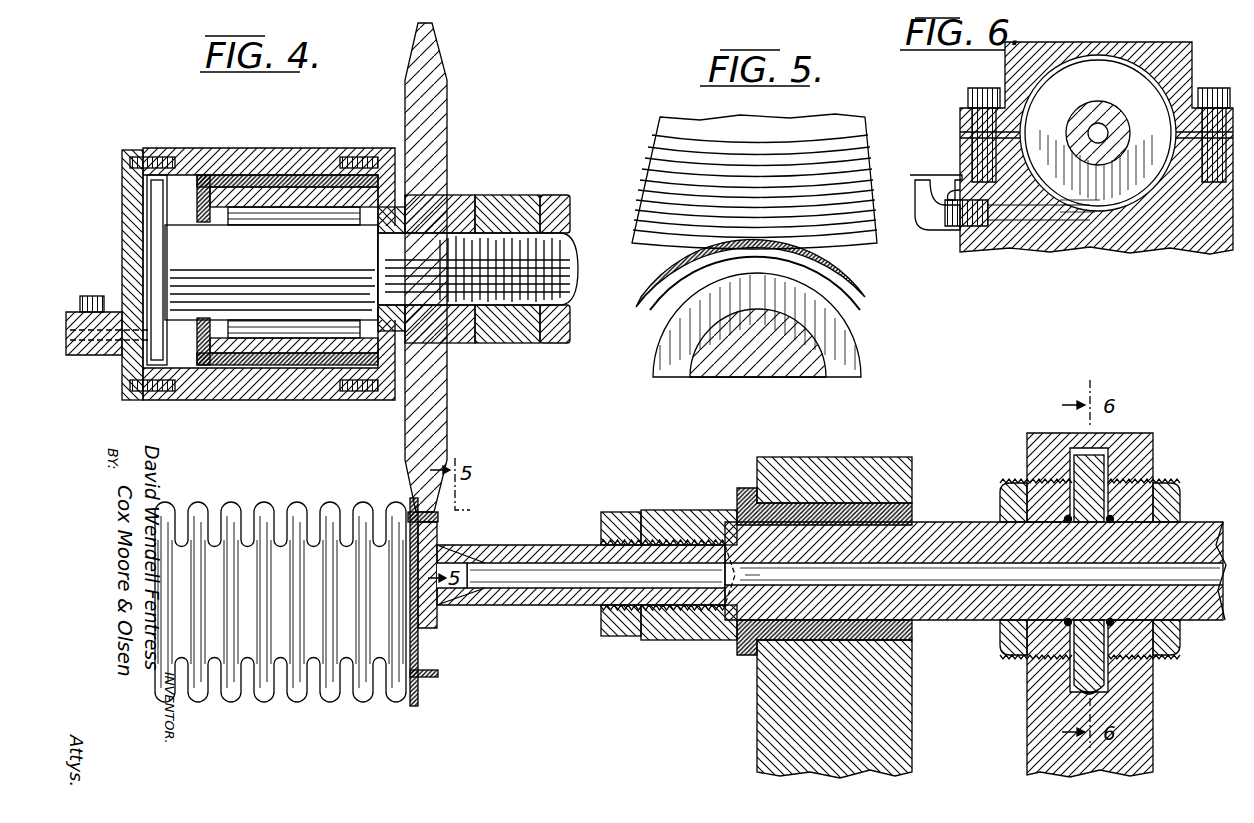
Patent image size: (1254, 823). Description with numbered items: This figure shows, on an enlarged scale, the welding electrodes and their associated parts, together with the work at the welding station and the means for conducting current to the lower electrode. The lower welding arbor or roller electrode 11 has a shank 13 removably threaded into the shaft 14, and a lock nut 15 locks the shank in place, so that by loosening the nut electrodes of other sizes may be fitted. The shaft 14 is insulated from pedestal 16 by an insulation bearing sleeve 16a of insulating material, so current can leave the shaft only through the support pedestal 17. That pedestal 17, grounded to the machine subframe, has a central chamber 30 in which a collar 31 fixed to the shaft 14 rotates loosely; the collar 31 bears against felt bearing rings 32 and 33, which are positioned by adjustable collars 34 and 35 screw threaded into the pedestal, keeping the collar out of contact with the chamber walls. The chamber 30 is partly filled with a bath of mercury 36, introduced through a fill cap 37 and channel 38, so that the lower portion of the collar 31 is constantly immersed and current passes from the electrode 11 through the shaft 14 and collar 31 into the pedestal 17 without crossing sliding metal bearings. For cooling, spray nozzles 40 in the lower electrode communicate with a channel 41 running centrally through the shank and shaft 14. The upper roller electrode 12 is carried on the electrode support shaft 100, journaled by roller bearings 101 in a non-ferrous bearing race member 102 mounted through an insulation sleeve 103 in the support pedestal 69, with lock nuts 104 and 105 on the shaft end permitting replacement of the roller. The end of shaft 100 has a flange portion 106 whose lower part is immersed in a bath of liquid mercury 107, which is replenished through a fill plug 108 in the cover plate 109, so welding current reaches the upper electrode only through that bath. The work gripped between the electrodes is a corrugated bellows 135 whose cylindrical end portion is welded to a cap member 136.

In FIG. 4, the lower welding arbor or roller electrode 11 is at (440, 624).
In FIG. 5, the lower welding arbor or roller electrode 11 is at (845, 355).
In FIG. 4, the upper roller electrode 12 is at (436, 397).
In FIG. 5, the upper roller electrode 12 is at (835, 120).
In FIG. 4, the shank 13 is at (515, 547).
In FIG. 5, the shank 13 is at (765, 380).
In FIG. 4, the shaft 14 is at (935, 524).
In FIG. 6, the shaft 14 is at (1088, 112).
In FIG. 4, the lock nut 15 is at (622, 512).
In FIG. 4, the pedestal 16 is at (850, 460).
In FIG. 4, the insulation bearing sleeve 16a is at (745, 660).
In FIG. 4, the support pedestal 17 is at (1160, 440).
In FIG. 6, the support pedestal 17 is at (1185, 48).
In FIG. 4, the central chamber or cavity 30 is at (1110, 480).
In FIG. 4, the collar 31 is at (1090, 465).
In FIG. 6, the collar 31 is at (1140, 185).
In FIG. 4, the bearing ring 32 is at (1068, 524).
In FIG. 4, the bearing ring 33 is at (1110, 524).
In FIG. 4, the adjustable collar 34 is at (1008, 658).
In FIG. 4, the adjustable collar 35 is at (1168, 658).
In FIG. 4, the bath of mercury 36 is at (1082, 693).
In FIG. 6, the bath of mercury 36 is at (1090, 215).
In FIG. 6, the fill cap 37 is at (935, 235).
In FIG. 6, the channel 38 is at (1005, 228).
In FIG. 4, the spray nozzles 40 is at (455, 547).
In FIG. 4, the channel 41 is at (745, 585).
In FIG. 6, the channel 41 is at (1102, 130).
In FIG. 4, the support pedestal 69 is at (205, 150).
In FIG. 4, the electrode support shaft or axle 100 is at (400, 212).
In FIG. 4, the roller bearings 101 is at (300, 212).
In FIG. 4, the non-ferrous bearing race member 102 is at (270, 200).
In FIG. 4, the insulation sleeve 103 is at (250, 178).
In FIG. 4, the lock nut 104 is at (500, 195).
In FIG. 4, the lock nut 105 is at (557, 195).
In FIG. 4, the flange portion 106 is at (155, 200).
In FIG. 4, the bath of liquid mercury 107 is at (130, 375).
In FIG. 4, the fill plug 108 is at (76, 355).
In FIG. 4, the cover plate 109 is at (130, 246).
In FIG. 4, the corrugated tubing or bellows 135 is at (268, 502).
In FIG. 5, the corrugated tubing or bellows 135 is at (855, 282).
In FIG. 4, the cap member 136 is at (418, 650).
In FIG. 5, the cap member 136 is at (858, 300).